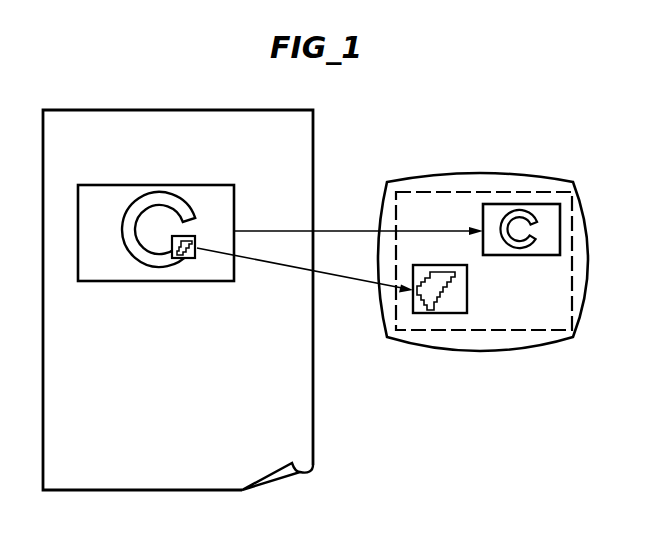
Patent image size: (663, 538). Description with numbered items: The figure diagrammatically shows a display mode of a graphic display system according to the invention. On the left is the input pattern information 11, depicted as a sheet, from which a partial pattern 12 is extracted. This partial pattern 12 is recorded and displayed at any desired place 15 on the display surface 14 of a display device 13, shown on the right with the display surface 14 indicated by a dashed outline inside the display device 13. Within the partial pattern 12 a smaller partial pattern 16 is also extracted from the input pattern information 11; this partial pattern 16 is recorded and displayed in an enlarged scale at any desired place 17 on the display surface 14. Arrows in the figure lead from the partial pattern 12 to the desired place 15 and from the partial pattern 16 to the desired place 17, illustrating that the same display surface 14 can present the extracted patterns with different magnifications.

The input pattern information 11 is at (313, 179).
The partial pattern 12 is at (193, 185).
The display device 13 is at (475, 173).
The display surface 14 is at (533, 192).
The desired place 15 is at (560, 230).
The partial pattern 16 is at (187, 258).
The desired place 17 is at (467, 295).